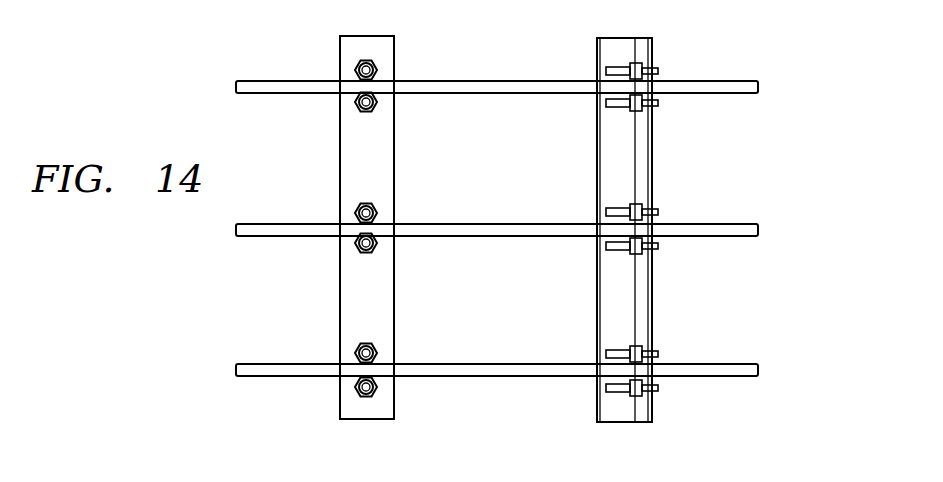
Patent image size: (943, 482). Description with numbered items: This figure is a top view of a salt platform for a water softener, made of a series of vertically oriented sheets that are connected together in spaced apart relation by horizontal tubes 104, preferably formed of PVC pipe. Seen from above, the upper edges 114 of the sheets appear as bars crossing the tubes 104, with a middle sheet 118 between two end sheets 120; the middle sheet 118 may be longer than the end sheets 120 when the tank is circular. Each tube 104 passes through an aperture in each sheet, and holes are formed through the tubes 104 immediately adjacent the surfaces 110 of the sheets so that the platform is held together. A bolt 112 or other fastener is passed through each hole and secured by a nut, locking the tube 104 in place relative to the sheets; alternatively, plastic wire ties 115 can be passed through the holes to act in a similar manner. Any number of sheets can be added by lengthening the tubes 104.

The horizontal tubes 104 is at (600, 176).
The surfaces 110 is at (530, 227).
The bolt 112 is at (357, 68).
The upper edges 114 is at (646, 198).
The plastic wire ties 115 is at (617, 66).
The middle sheet 118 is at (760, 232).
The end sheets 120 is at (760, 87).